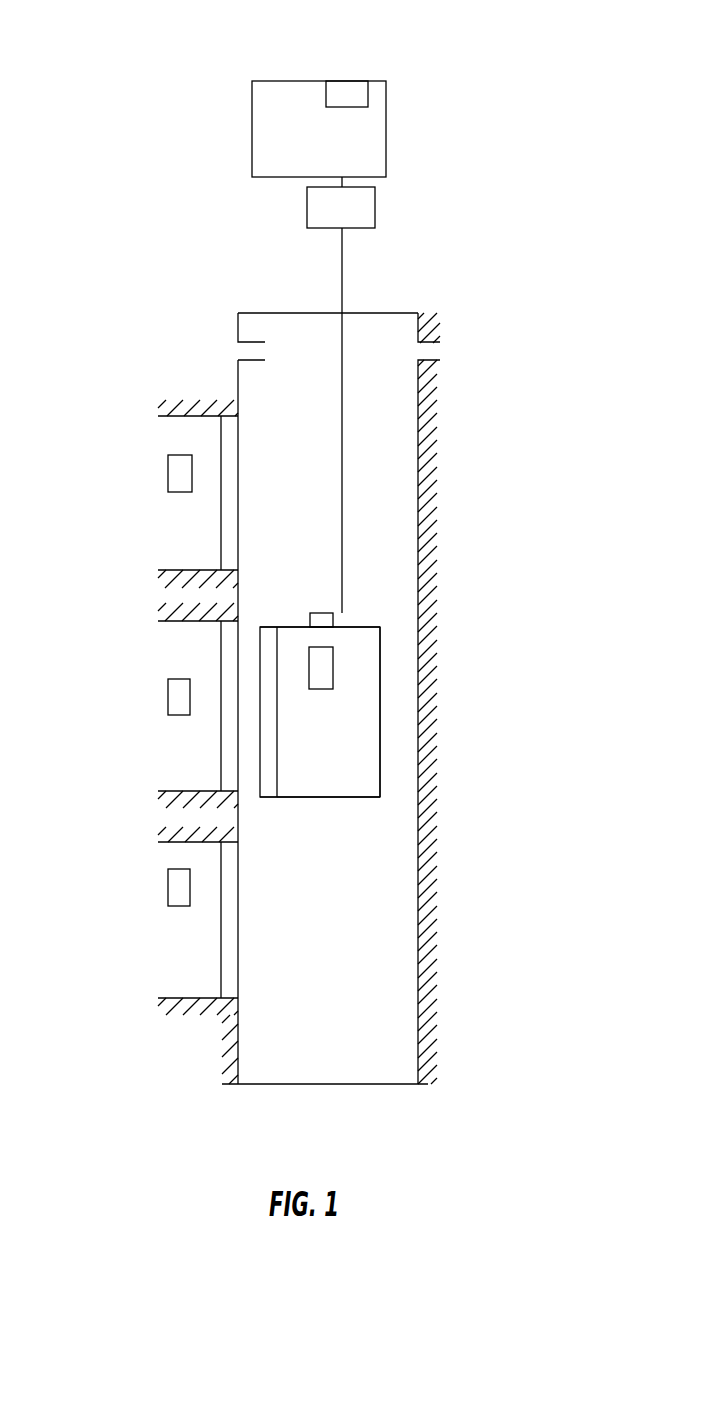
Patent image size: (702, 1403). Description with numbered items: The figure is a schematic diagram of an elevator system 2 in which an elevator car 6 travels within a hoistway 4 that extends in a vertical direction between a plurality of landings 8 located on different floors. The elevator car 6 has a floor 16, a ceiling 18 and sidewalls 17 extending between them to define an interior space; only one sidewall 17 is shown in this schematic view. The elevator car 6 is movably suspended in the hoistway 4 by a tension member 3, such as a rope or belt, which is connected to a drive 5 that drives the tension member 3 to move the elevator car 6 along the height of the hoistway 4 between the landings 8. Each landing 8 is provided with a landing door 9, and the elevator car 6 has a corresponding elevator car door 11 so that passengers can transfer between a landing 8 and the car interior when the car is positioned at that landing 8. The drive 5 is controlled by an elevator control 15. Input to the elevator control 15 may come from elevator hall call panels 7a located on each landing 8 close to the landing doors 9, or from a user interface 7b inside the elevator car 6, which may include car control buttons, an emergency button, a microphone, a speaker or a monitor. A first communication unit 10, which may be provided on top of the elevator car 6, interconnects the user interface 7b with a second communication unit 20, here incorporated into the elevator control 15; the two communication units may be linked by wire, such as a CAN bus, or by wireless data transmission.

The elevator system 2 is at (346, 158).
The tension member 3 is at (343, 300).
The hoistway 4 is at (243, 293).
The drive 5 is at (325, 218).
The elevator car 6 is at (327, 710).
The elevator hall call panel 7a is at (178, 472).
The user interface 7b is at (321, 689).
The landing 8 is at (202, 707).
The landing door 9 is at (229, 517).
The first communication unit 10 is at (323, 612).
The elevator car door 11 is at (271, 798).
The elevator control 15 is at (291, 100).
The floor 16 is at (305, 793).
The sidewall 17 is at (378, 752).
The ceiling 18 is at (365, 626).
The second communication unit 20 is at (344, 93).